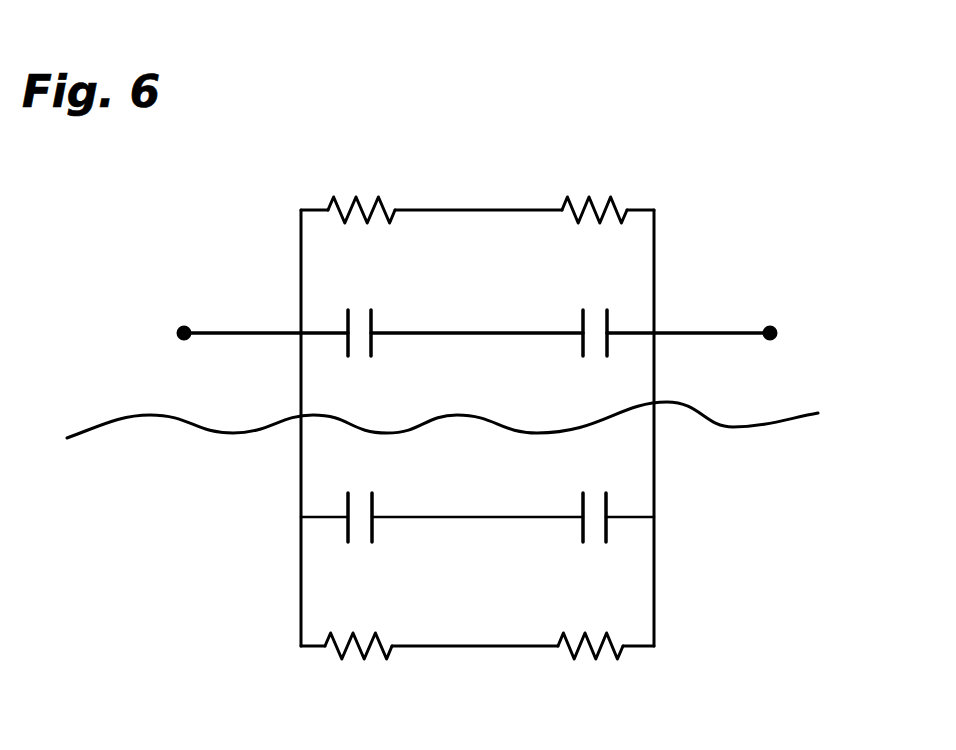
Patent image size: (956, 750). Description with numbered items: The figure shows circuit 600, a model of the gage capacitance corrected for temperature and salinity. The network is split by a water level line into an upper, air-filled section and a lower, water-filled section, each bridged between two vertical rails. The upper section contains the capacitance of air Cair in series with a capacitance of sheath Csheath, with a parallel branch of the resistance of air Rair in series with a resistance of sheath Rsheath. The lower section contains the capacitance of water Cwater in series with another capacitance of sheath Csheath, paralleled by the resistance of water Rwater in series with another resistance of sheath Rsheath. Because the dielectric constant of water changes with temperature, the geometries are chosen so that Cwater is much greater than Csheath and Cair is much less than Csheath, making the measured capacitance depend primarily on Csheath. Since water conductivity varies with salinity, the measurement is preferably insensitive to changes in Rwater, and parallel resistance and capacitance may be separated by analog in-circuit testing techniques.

The circuit 600 is at (709, 186).
The resistance of air Rair is at (361, 193).
The resistance of sheath Rsheath is at (595, 432).
The resistance of water Rwater is at (361, 667).
The capacitance of air Cair is at (359, 315).
The capacitance of sheath Csheath is at (608, 430).
The capacitance of water Cwater is at (379, 539).